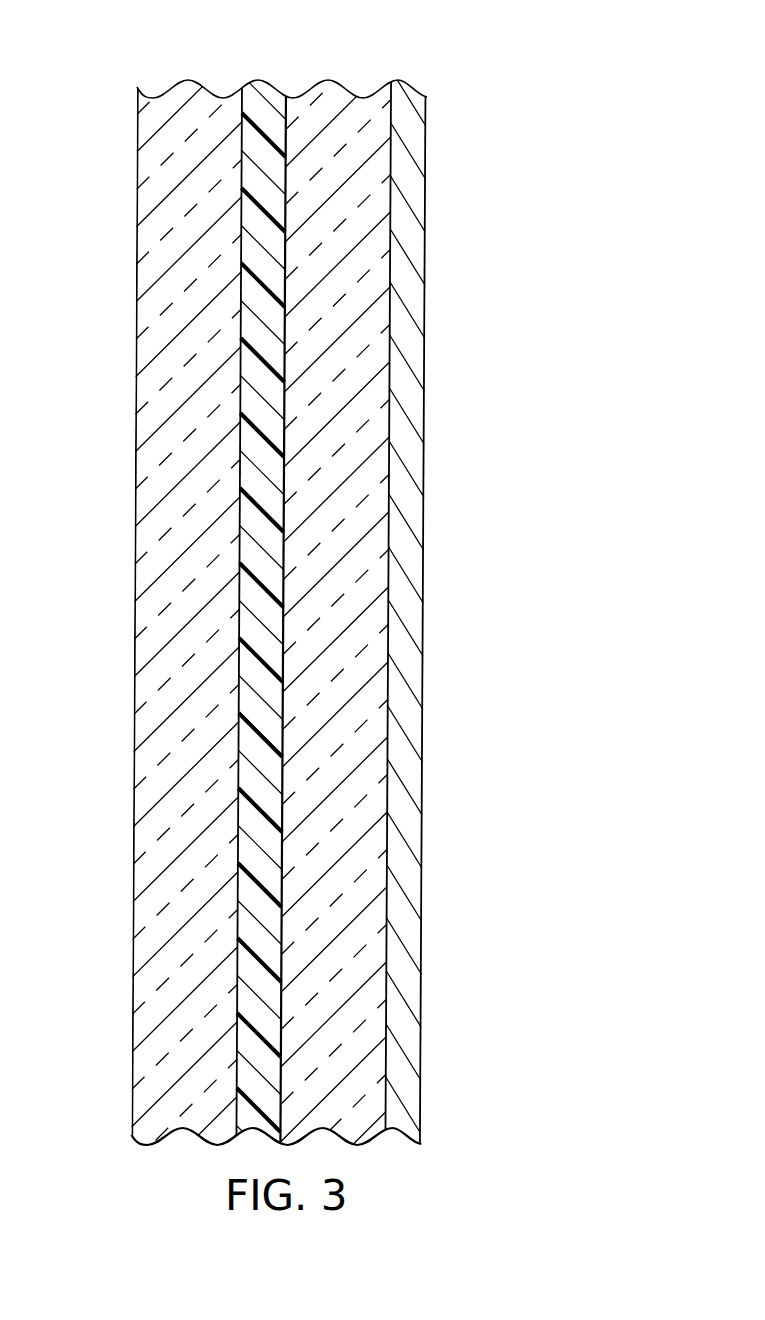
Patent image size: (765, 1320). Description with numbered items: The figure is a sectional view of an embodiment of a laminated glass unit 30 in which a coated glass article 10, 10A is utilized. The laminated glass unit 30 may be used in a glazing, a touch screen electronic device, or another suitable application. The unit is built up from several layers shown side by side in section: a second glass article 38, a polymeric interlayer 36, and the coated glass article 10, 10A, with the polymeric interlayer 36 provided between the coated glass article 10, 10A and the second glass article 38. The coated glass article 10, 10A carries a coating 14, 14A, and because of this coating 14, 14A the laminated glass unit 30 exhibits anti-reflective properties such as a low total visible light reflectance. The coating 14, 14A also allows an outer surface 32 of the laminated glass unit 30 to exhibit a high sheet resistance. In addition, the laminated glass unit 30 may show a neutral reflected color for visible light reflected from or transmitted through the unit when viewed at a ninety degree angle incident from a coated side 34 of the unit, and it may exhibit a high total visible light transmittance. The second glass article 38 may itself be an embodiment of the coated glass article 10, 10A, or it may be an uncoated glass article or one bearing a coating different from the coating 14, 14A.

The laminated glass unit 30 is at (548, 93).
The second glass article 38 is at (192, 107).
The polymeric interlayer 36 is at (266, 107).
The coated glass article 10 is at (344, 608).
The coated glass article 10A is at (325, 107).
The coating 14 is at (456, 612).
The coating 14A is at (367, 119).
The coated side 34 is at (440, 498).
The outer surface 32 is at (428, 622).